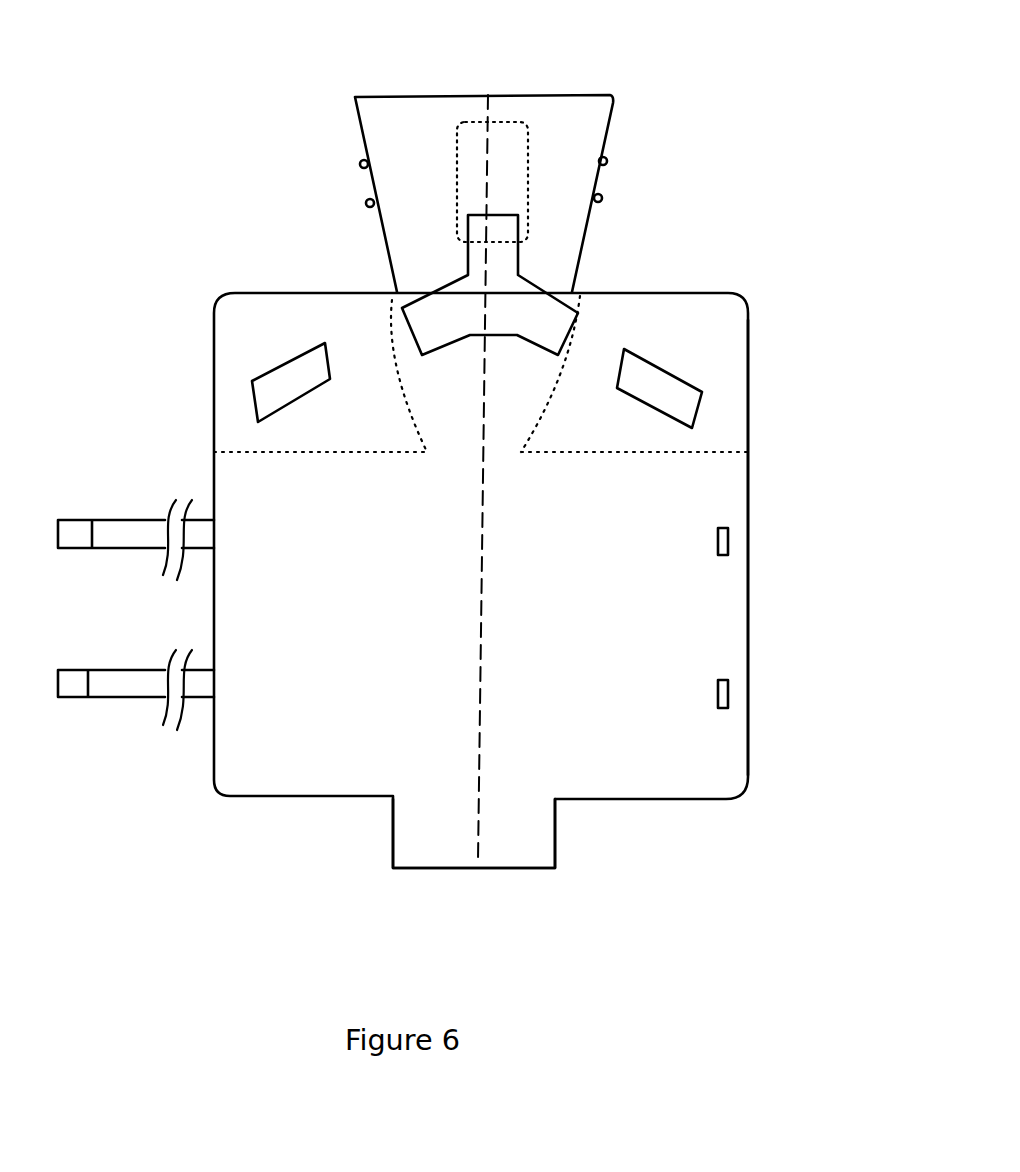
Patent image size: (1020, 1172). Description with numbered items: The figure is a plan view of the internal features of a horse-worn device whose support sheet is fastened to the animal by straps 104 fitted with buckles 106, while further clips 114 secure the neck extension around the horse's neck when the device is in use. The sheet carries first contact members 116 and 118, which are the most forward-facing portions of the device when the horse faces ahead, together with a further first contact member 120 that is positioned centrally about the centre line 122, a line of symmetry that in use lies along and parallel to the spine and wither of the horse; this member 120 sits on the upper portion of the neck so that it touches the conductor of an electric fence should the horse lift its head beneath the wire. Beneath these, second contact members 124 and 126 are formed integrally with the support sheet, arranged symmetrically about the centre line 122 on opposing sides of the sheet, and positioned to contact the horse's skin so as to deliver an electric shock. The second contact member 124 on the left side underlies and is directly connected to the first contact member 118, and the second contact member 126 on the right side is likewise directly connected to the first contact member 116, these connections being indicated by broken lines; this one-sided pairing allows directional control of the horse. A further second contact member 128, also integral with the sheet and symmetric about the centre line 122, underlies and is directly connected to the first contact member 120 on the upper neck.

The straps 104 is at (125, 682).
The buckles 106 is at (765, 688).
The clips 114 is at (607, 160).
The first contact member 116 is at (273, 323).
The first contact member 118 is at (723, 373).
The first contact member 120 is at (473, 157).
The centre line 122 is at (480, 845).
The second contact member 124 is at (673, 405).
The second contact member 126 is at (273, 392).
The second contact member 128 is at (495, 302).